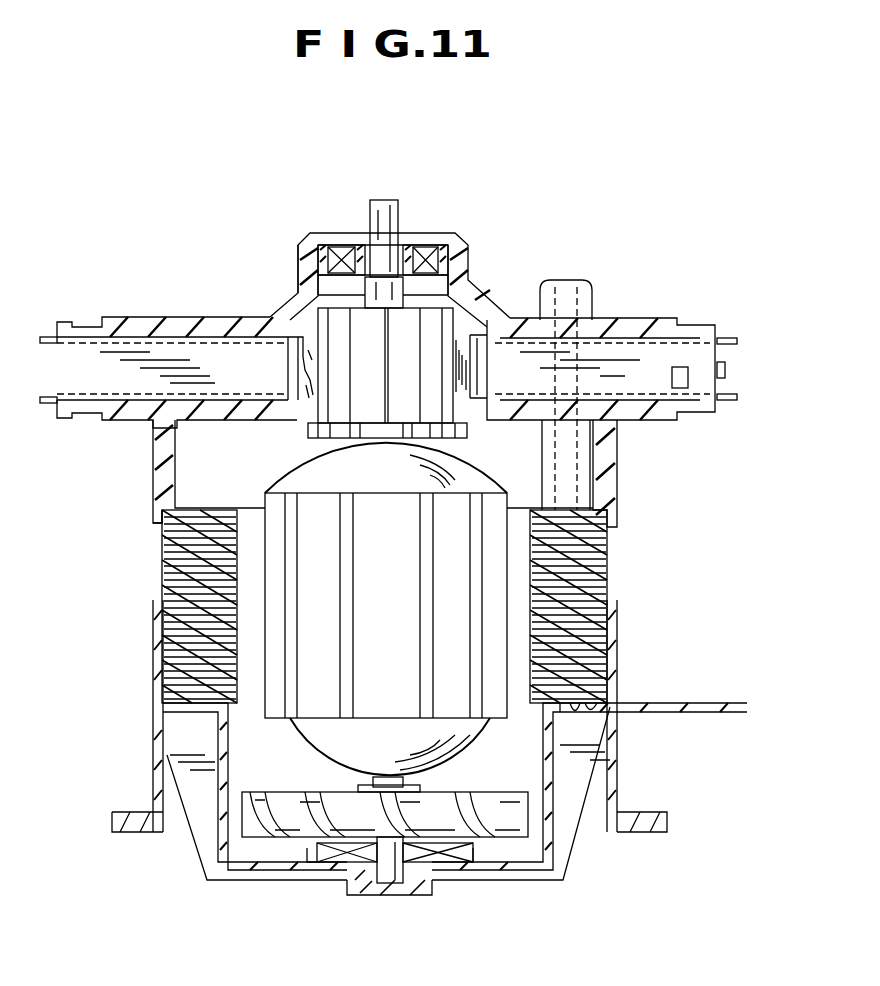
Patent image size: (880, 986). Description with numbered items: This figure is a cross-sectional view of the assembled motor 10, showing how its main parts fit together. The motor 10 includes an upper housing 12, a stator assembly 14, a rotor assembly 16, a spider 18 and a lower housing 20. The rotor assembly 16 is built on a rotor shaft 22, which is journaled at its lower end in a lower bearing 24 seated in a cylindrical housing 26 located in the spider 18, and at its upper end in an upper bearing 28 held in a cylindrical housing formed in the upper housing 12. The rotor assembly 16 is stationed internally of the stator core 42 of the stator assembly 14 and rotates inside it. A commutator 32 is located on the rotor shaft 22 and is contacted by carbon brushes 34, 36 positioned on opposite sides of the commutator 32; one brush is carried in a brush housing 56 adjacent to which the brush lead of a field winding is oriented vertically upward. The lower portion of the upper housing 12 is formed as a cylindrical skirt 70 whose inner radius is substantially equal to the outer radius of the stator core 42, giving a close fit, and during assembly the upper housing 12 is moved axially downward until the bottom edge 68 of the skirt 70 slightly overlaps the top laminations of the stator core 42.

The motor 10 is at (570, 240).
The upper housing 12 is at (252, 280).
The stator assembly 14 is at (150, 580).
The rotor assembly 16 is at (282, 482).
The spider 18 is at (190, 860).
The lower housing 20 is at (143, 750).
The rotor shaft 22 is at (397, 213).
The lower bearing 24 is at (440, 860).
The cylindrical housing 26 is at (480, 850).
The upper bearing 28 is at (343, 252).
The commutator 32 is at (437, 407).
The carbon brush 34 is at (463, 337).
The carbon brush 36 is at (313, 407).
The stator core 42 is at (605, 563).
The brush housing 56 is at (620, 320).
The bottom edge 68 is at (157, 528).
The skirt 70 is at (153, 465).